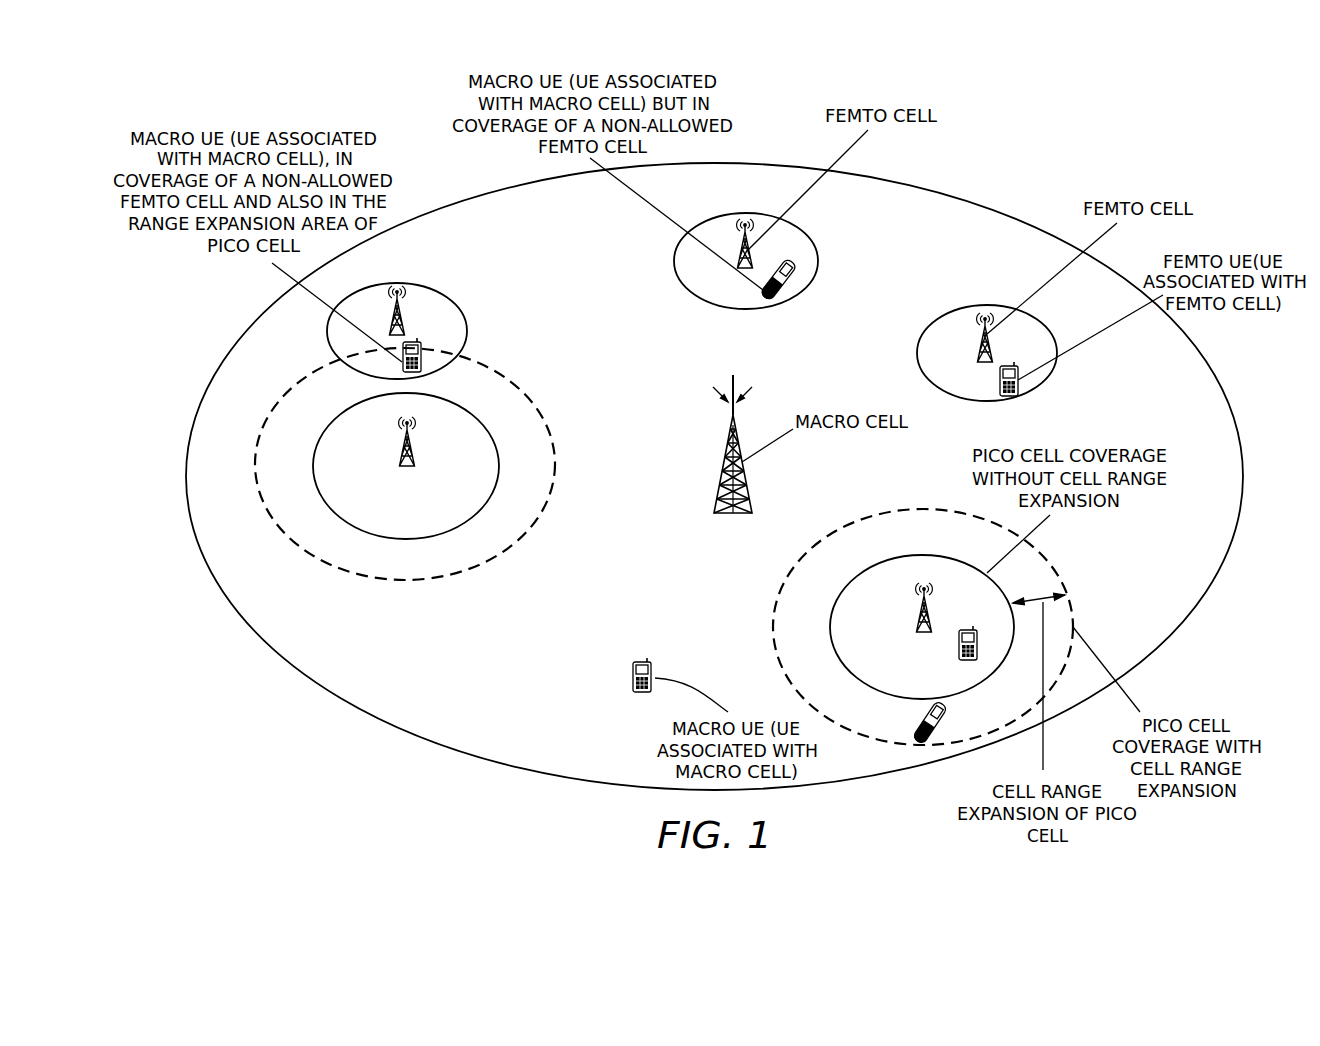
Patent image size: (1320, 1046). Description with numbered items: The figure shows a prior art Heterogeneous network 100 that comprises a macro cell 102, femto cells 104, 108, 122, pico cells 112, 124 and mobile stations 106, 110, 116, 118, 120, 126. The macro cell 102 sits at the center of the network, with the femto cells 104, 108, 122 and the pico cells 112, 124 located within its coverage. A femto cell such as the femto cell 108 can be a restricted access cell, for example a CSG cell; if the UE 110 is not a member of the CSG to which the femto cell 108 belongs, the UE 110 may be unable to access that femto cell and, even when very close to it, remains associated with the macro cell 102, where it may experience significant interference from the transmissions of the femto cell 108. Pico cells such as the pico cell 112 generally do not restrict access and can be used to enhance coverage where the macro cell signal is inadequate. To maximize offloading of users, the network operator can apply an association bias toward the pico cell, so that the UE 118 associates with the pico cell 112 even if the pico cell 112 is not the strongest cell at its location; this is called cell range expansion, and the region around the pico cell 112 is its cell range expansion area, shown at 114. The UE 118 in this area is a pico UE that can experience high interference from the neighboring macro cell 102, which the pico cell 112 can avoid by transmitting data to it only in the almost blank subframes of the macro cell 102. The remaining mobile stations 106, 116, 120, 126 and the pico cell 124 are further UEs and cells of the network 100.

The Heterogeneous network 100 is at (966, 201).
The macro cell 102 is at (722, 465).
The femto cell 104 is at (993, 340).
The mobile station 106 is at (1018, 388).
The femto cell 108 is at (788, 223).
The UE 110 is at (783, 296).
The pico cell 112 is at (923, 555).
The pico cell coverage with cell range expansion 114 is at (917, 513).
The mobile station 116 is at (958, 652).
The UE 118 is at (925, 712).
The mobile station 120 is at (412, 344).
The femto cell 122 is at (430, 285).
The pico cell 124 is at (409, 464).
The mobile station 126 is at (632, 684).